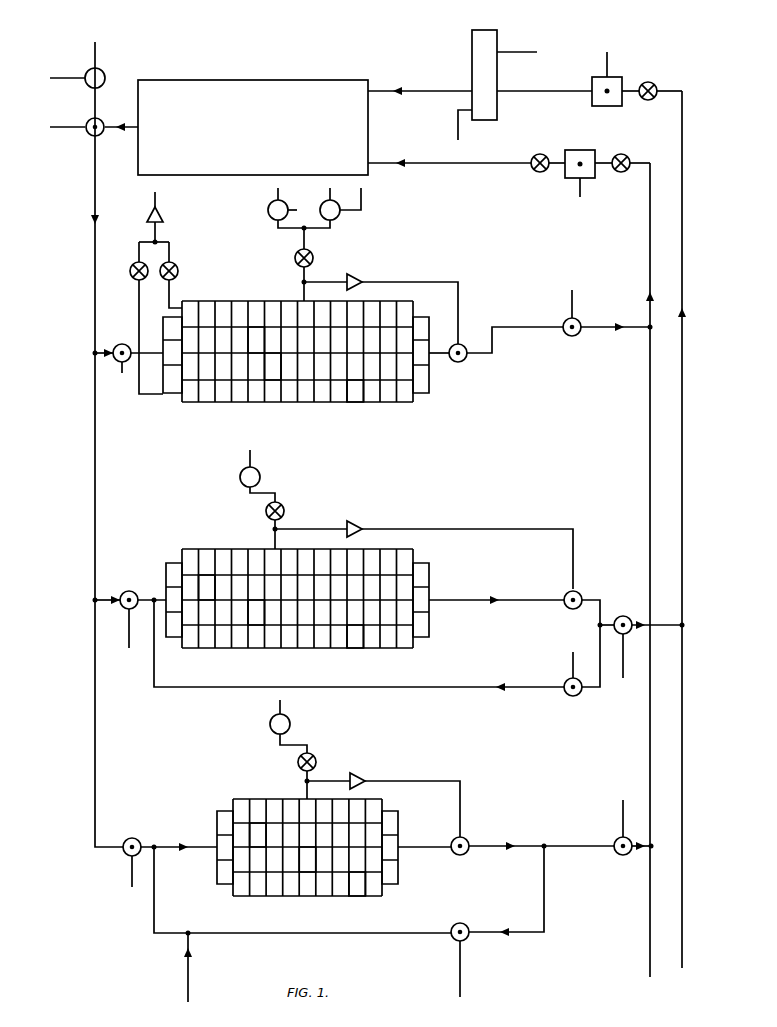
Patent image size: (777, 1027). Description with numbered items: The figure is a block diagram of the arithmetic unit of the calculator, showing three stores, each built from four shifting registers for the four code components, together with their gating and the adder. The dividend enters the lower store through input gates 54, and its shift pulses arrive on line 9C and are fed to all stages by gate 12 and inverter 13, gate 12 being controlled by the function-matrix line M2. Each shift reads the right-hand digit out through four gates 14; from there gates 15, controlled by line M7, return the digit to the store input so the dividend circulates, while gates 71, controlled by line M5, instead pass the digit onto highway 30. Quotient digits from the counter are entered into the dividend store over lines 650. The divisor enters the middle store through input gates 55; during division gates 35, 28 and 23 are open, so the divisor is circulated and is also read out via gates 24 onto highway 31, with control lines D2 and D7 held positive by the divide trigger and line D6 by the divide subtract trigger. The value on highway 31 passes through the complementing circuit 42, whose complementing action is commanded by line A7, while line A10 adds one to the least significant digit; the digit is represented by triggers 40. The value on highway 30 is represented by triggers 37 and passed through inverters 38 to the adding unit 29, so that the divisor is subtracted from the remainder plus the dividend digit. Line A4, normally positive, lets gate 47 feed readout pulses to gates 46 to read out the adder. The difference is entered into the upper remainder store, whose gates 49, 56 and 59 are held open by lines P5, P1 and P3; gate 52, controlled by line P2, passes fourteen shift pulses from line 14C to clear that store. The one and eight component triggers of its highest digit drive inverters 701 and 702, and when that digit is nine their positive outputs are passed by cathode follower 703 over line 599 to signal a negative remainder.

The control line A4 is at (68, 78).
The gate 47 is at (102, 71).
The gates 46 is at (103, 136).
The adding unit 29 is at (253, 95).
The complementing circuit 42 is at (480, 52).
The control line A7 is at (510, 52).
The control line A10 is at (458, 128).
The triggers 40 is at (592, 78).
The inverters 38 is at (545, 153).
The triggers 37 is at (590, 138).
The highway 30 is at (648, 220).
The highway 31 is at (682, 275).
The line 599 is at (171, 195).
The cathode follower 703 is at (163, 215).
The inverter 701 is at (177, 265).
The inverter 702 is at (131, 277).
The control line P2 is at (270, 201).
The control line P3 is at (332, 200).
The line 14C is at (268, 206).
The gate 52 is at (301, 210).
The gate 59 is at (337, 218).
The gate 56 is at (116, 345).
The control line P1 is at (122, 373).
The control line P5 is at (574, 296).
The gate 49 is at (579, 334).
The control line D2 is at (244, 469).
The gate 28 is at (243, 487).
The input gates 55 is at (143, 582).
The gates 24 is at (566, 607).
The control line D7 is at (572, 661).
The gate 23 is at (580, 696).
The gate 35 is at (632, 632).
The control line D6 is at (623, 660).
The line M2 is at (278, 712).
The line 9C is at (270, 724).
The gate 12 is at (273, 734).
The inverter 13 is at (316, 762).
The input gates 54 is at (146, 824).
The gates 14 is at (467, 840).
The line M5 is at (623, 805).
The gates 71 is at (623, 855).
The gates 15 is at (460, 923).
The line M7 is at (462, 990).
The lines 650 is at (188, 966).